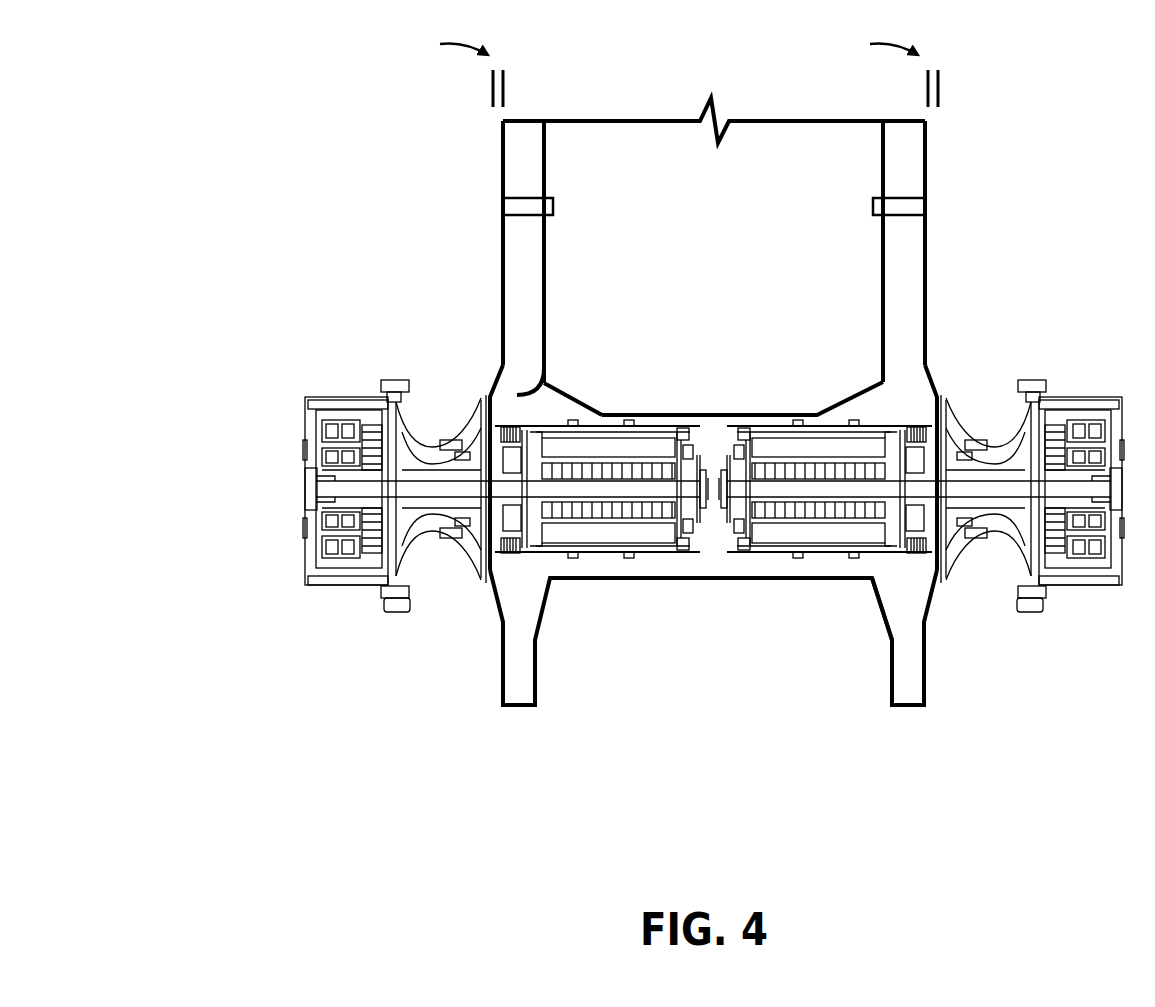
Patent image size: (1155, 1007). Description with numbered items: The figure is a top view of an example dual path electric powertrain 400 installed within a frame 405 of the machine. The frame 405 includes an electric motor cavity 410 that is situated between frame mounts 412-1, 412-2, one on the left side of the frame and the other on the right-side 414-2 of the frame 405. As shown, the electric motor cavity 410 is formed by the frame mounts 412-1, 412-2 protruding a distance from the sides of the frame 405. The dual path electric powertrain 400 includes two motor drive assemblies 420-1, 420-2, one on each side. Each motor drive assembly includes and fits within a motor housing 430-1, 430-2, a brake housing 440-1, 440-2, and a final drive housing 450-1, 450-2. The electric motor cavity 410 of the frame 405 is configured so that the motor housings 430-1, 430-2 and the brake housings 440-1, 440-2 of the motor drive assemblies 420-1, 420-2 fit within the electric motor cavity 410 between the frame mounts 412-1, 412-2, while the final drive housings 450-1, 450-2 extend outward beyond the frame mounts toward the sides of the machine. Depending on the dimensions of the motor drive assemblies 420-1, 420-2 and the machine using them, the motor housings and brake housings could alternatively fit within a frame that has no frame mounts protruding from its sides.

The dual path electric powertrain 400 is at (190, 51).
The frame 405 is at (474, 150).
The electric motor cavity 410 is at (735, 398).
The frame mount 412-1 is at (490, 396).
The frame mount 412-2 is at (937, 398).
The right-side 414-2 is at (503, 258).
The motor drive assembly 420-1 is at (697, 685).
The motor drive assembly 420-2 is at (1088, 685).
The motor housing 430-1 is at (580, 555).
The motor housing 430-2 is at (795, 555).
The brake housing 440-1 is at (544, 358).
The brake housing 440-2 is at (917, 582).
The final drive housing 450-1 is at (327, 580).
The final drive housing 450-2 is at (1062, 580).